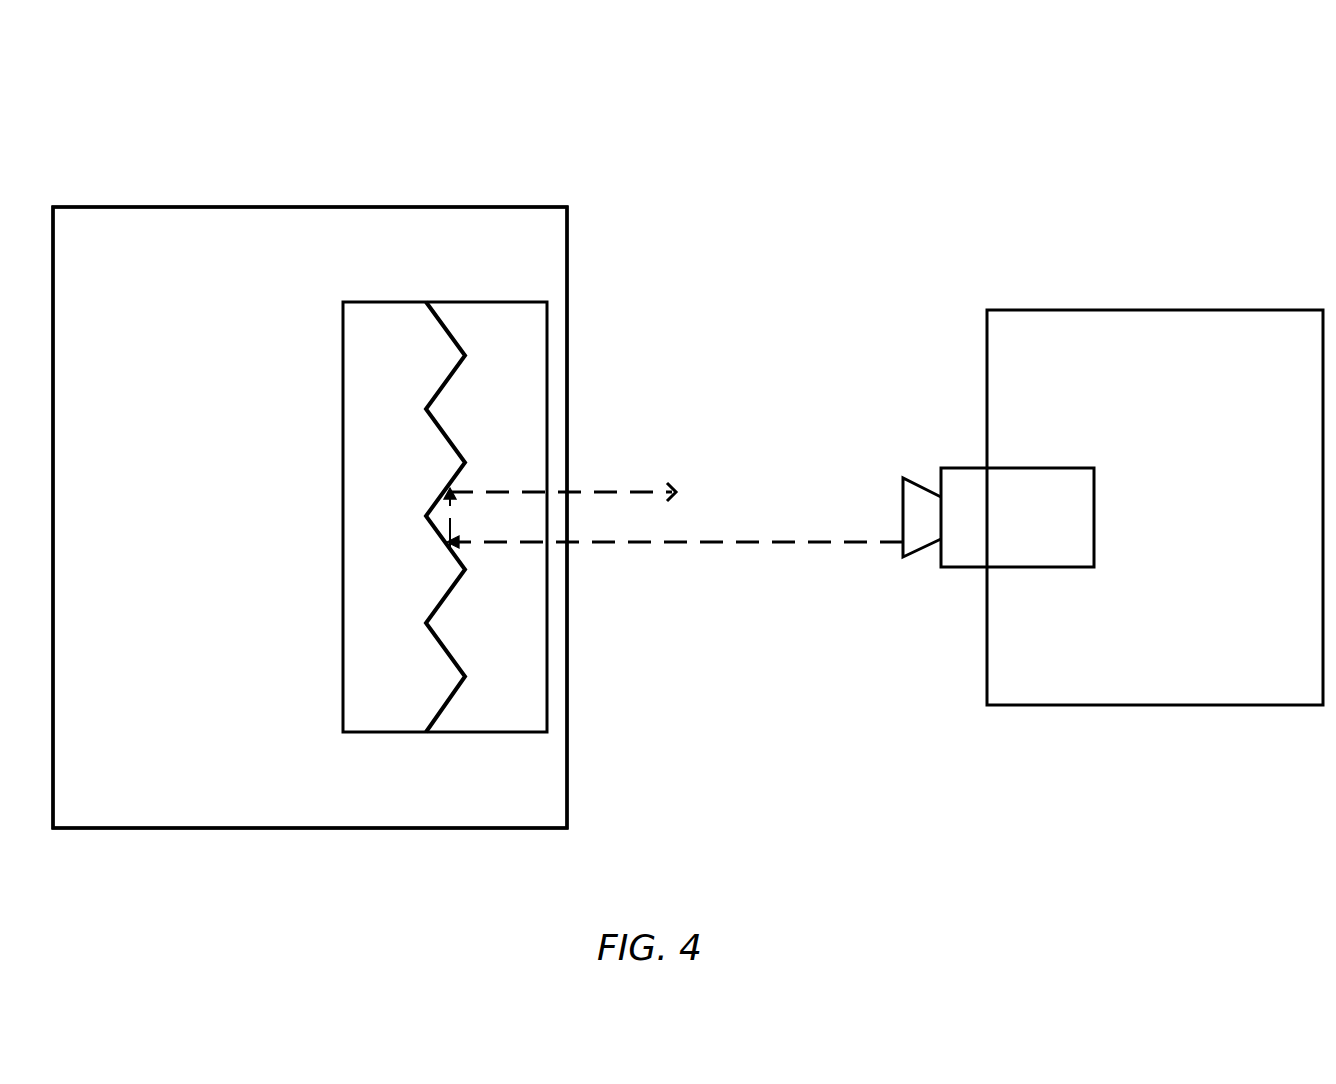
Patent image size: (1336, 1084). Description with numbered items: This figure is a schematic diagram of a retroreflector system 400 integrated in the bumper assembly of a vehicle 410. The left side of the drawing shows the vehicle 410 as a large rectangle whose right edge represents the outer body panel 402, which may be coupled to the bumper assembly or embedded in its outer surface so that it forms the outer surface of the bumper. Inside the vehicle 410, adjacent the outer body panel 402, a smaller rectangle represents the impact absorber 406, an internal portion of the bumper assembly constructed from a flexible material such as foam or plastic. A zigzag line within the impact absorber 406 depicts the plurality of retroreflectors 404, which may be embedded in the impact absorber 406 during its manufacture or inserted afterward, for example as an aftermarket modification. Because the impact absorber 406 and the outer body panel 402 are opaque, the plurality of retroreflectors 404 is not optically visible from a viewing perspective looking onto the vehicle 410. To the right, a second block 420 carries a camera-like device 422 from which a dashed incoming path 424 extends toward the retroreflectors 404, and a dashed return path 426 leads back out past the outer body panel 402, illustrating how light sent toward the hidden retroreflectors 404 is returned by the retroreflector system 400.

The retroreflector system 400 is at (96, 153).
The outer body panel 402 is at (572, 319).
The plurality of retroreflectors 404 is at (463, 322).
The impact absorber 406 is at (372, 711).
The vehicle 410 is at (310, 517).
The second device 420 is at (1155, 507).
The camera 422 is at (1086, 461).
The incident light path 424 is at (745, 552).
The reflected light path 426 is at (629, 482).